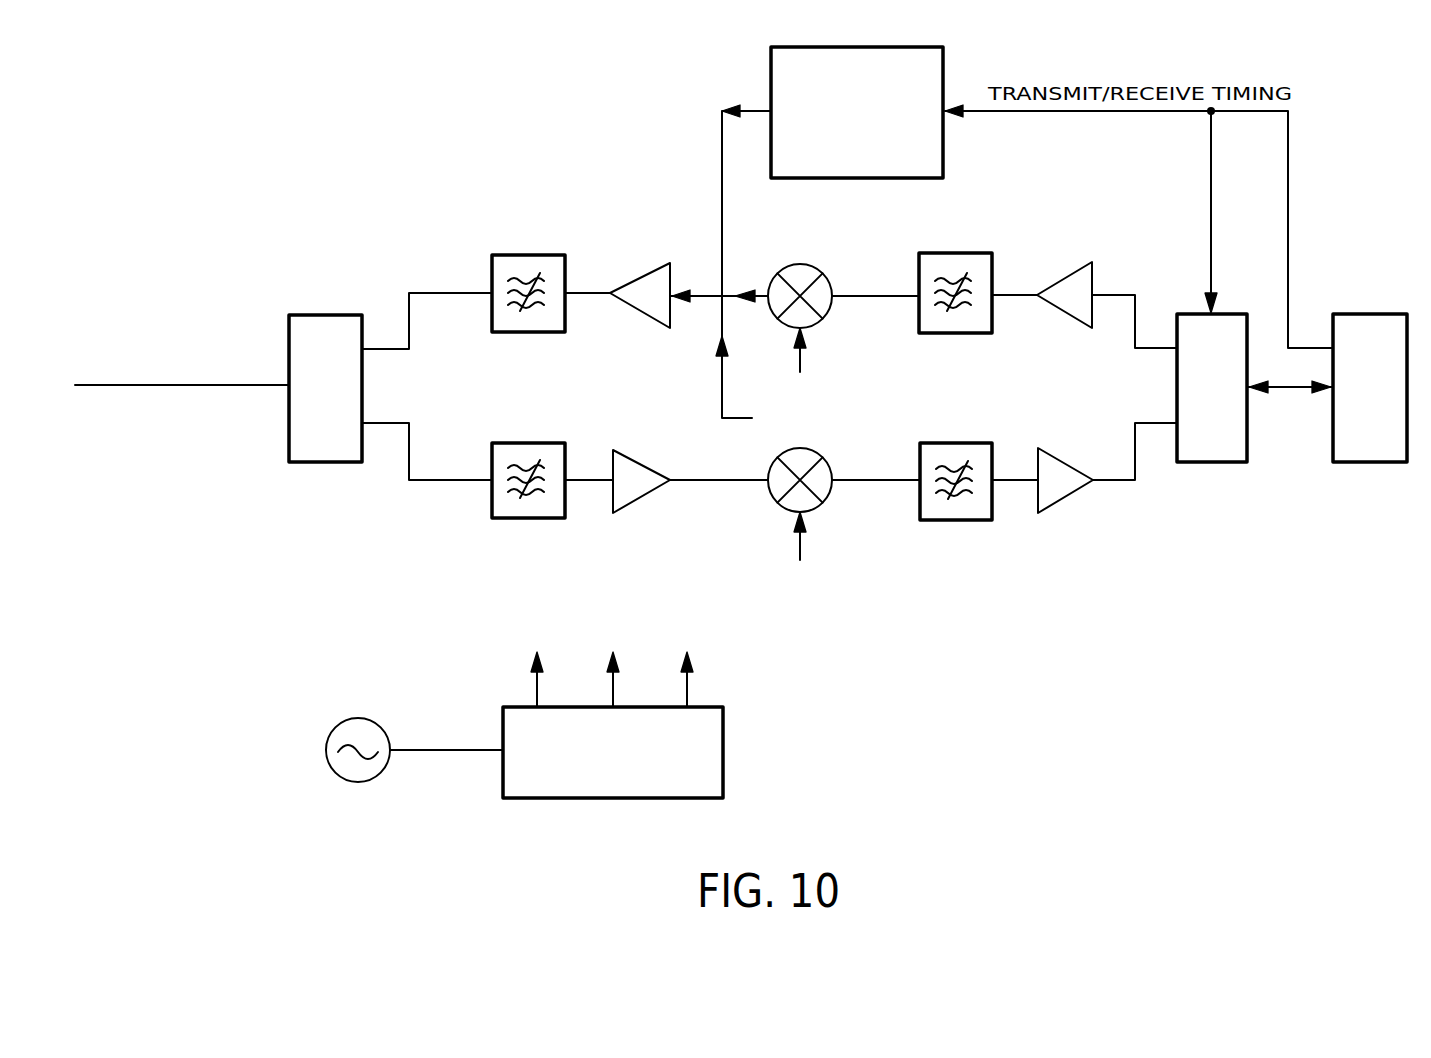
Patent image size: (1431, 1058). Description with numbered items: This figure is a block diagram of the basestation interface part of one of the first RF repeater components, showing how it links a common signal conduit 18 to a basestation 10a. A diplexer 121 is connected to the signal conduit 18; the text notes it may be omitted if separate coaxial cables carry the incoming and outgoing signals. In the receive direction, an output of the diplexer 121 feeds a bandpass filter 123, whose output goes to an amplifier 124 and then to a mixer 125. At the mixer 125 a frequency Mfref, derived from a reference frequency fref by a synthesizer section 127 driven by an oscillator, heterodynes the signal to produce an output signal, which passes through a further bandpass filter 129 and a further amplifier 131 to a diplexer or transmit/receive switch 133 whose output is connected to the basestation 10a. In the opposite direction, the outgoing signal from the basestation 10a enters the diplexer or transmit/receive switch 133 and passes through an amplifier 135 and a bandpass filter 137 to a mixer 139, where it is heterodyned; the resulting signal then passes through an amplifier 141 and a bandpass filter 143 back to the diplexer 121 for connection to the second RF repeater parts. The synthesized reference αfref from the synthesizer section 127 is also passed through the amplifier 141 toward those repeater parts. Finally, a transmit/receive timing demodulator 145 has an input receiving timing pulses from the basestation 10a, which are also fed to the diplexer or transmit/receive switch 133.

The common signal conduit 18 is at (175, 388).
The diplexer 121 is at (330, 465).
The bandpass filter 123 is at (525, 520).
The amplifier 124 is at (633, 503).
The mixer 125 is at (825, 500).
The synthesizer section 127 is at (615, 800).
The further bandpass filter 129 is at (955, 523).
The further amplifier 131 is at (1066, 505).
The diplexer or transmit/receive switch 133 is at (1225, 465).
The amplifier 135 is at (1066, 328).
The bandpass filter 137 is at (955, 335).
The mixer 139 is at (796, 264).
The amplifier 141 is at (650, 327).
The bandpass filter 143 is at (525, 335).
The transmit/receive timing demodulator 145 is at (860, 180).
The basestation 10a is at (1372, 465).